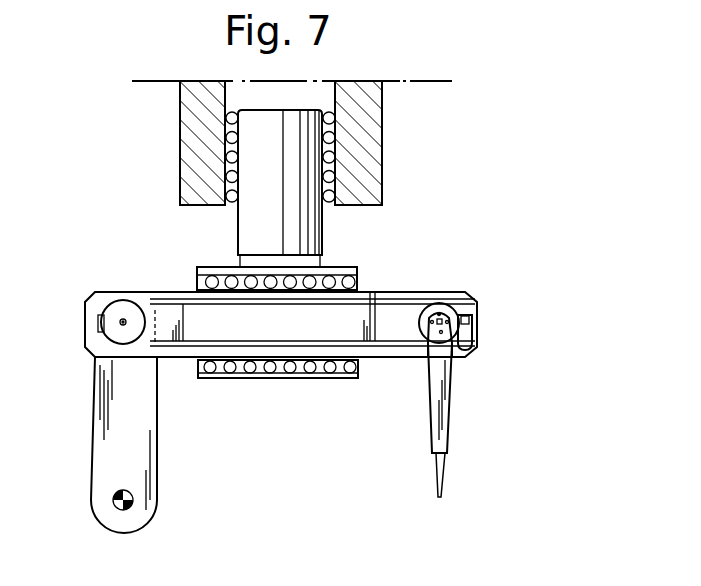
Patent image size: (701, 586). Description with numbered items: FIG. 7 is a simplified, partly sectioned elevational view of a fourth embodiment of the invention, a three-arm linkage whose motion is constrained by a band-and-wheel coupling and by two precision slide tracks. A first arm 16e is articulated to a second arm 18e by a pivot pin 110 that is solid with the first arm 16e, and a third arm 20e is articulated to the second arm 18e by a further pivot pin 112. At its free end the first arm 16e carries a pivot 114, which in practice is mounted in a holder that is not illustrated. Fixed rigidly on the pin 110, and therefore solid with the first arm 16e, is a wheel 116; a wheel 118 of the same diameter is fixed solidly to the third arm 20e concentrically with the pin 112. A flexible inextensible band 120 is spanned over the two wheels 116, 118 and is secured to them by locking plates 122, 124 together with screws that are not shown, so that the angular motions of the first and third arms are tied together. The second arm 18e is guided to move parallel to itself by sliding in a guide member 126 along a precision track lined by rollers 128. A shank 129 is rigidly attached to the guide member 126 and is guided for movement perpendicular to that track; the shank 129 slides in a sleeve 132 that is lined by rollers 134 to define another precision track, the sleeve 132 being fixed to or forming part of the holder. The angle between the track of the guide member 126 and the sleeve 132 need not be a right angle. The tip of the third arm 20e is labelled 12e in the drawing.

The sleeve 132 is at (372, 150).
The rollers 134 is at (228, 208).
The shank 129 is at (308, 229).
The guide member 126 is at (205, 273).
The rollers 128 is at (357, 281).
The second arm 18e is at (423, 298).
The pivot pin 110 is at (123, 319).
The wheel 116 is at (117, 332).
The locking plate 122 is at (100, 324).
The wheel 118 is at (421, 327).
The pivot pin 112 is at (428, 352).
The locking plate 124 is at (467, 353).
The flexible inextensible band 120 is at (380, 360).
The first arm 16e is at (95, 412).
The pivot 114 is at (133, 503).
The third arm 20e is at (428, 415).
The tip 12e is at (435, 478).